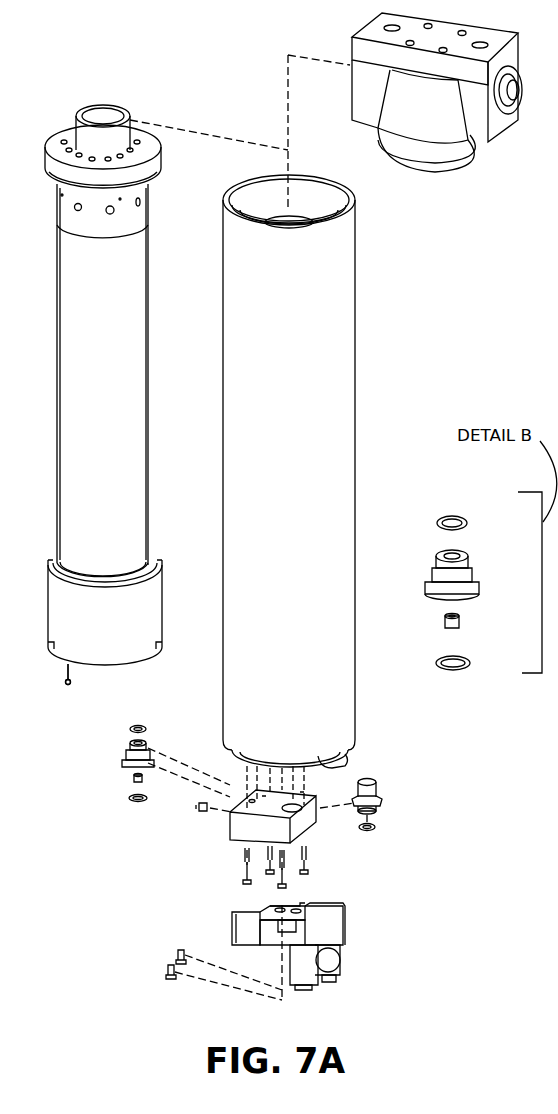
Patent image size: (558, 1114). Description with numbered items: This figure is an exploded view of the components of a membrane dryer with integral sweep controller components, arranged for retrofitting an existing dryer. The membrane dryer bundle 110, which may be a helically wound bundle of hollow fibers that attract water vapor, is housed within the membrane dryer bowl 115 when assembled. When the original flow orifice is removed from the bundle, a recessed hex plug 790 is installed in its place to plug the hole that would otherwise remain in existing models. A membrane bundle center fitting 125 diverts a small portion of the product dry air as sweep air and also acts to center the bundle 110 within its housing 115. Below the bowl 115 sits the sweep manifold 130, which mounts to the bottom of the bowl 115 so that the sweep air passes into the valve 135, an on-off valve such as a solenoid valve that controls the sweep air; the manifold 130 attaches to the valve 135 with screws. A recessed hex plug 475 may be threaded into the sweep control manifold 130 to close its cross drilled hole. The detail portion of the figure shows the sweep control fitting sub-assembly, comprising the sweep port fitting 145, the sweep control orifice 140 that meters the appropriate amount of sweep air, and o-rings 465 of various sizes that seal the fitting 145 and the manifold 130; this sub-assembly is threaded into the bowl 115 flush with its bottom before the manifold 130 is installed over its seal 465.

The membrane dryer bundle 110 is at (56, 403).
The membrane dryer bowl 115 is at (356, 402).
The membrane bundle center fitting 125 is at (386, 800).
The sweep manifold 130 is at (312, 822).
The valve 135 is at (345, 930).
The sweep control orifice 140 is at (128, 780).
The sweep port fitting 145 is at (122, 753).
The o-rings 465 is at (378, 826).
The recessed hex plug 475 is at (197, 812).
The recessed hex plug 790 is at (64, 688).